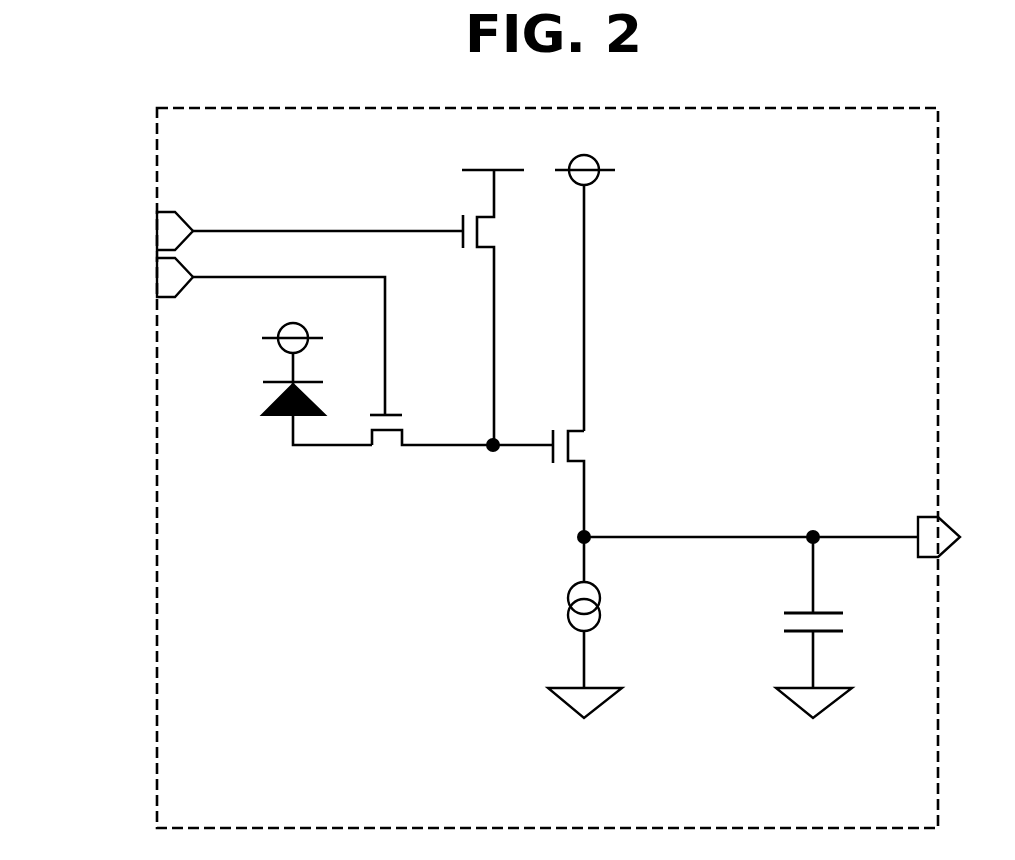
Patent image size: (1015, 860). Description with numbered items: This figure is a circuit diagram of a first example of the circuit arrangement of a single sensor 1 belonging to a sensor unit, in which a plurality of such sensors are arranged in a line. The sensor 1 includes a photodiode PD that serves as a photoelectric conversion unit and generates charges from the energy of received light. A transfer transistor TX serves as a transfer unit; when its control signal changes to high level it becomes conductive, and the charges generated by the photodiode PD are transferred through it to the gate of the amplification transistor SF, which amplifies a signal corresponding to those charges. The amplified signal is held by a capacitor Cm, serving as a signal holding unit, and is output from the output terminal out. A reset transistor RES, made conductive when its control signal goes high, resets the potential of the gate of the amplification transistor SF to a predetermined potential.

The sensor 1 is at (155, 765).
The photodiode PD is at (270, 395).
The transfer transistor TX is at (385, 451).
The reset transistor RES is at (472, 213).
The amplification transistor SF is at (582, 446).
The capacitor Cm is at (782, 618).
The output terminal out is at (959, 537).